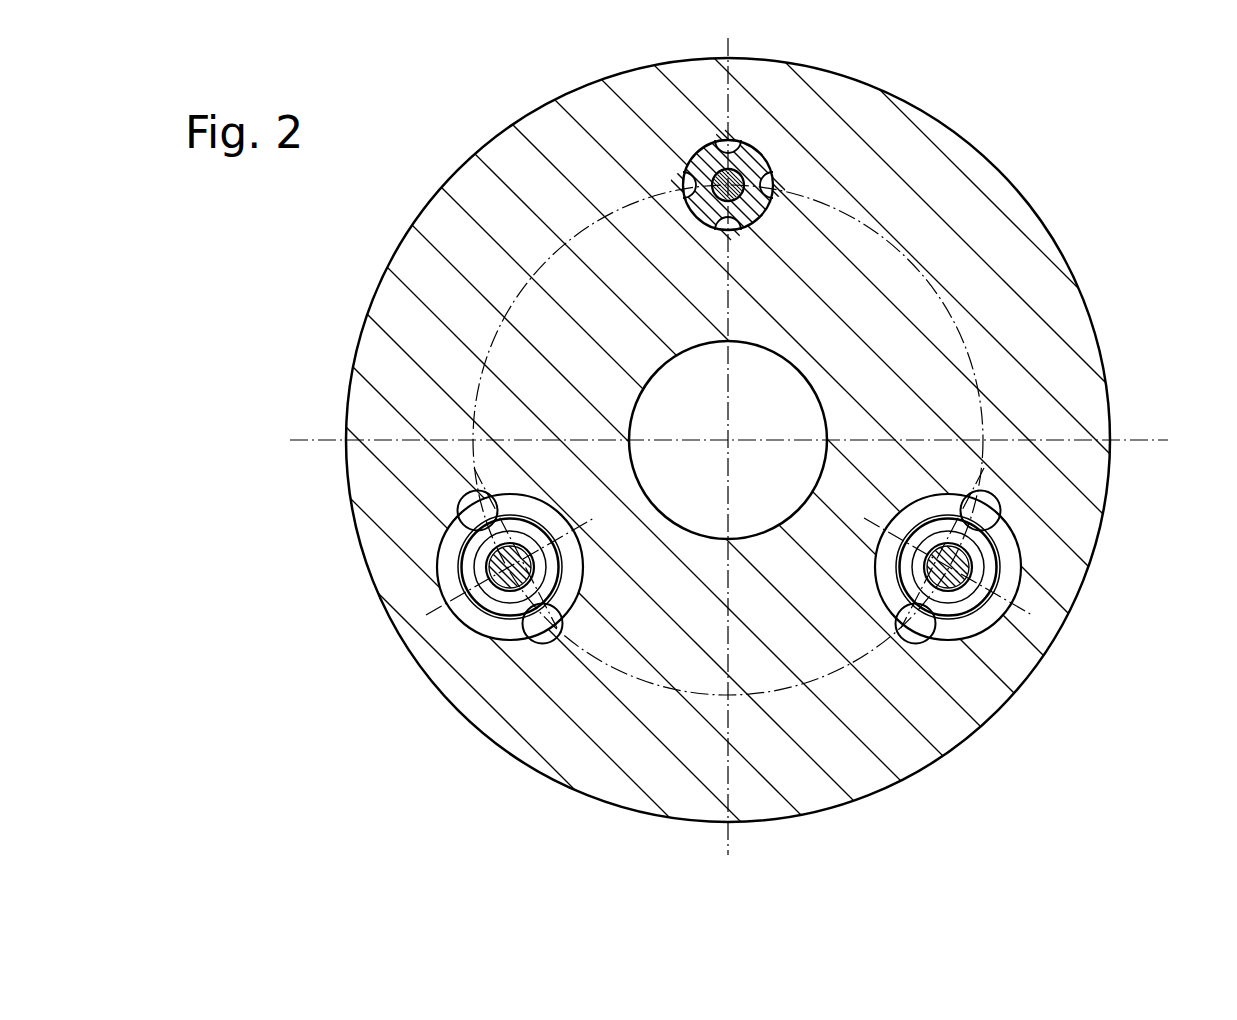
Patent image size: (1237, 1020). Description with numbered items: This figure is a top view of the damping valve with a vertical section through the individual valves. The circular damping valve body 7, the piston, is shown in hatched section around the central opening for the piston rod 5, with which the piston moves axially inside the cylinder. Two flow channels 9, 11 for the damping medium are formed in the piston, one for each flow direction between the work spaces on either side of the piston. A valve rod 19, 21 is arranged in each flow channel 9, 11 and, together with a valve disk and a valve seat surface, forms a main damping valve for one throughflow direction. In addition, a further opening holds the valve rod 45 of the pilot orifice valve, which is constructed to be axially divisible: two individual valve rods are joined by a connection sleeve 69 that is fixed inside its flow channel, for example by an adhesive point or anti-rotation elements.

The piston rod 5 is at (695, 503).
The damping valve body 7 is at (932, 724).
The flow channel 9 is at (493, 623).
The flow channel 11 is at (988, 620).
The valve rod 19 is at (492, 552).
The valve rod 21 is at (963, 563).
The valve rod 45 is at (748, 178).
The connection sleeve 69 is at (760, 166).